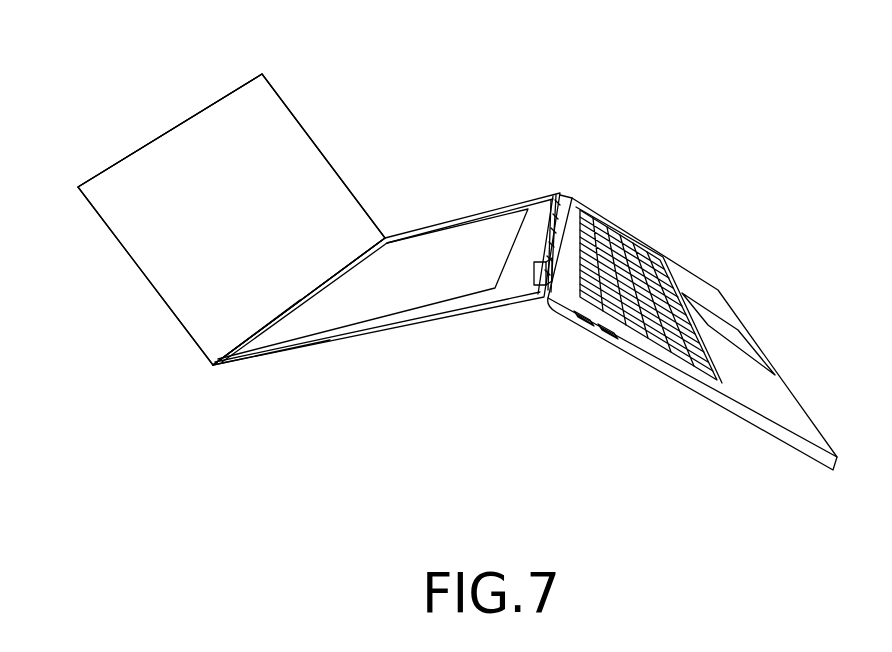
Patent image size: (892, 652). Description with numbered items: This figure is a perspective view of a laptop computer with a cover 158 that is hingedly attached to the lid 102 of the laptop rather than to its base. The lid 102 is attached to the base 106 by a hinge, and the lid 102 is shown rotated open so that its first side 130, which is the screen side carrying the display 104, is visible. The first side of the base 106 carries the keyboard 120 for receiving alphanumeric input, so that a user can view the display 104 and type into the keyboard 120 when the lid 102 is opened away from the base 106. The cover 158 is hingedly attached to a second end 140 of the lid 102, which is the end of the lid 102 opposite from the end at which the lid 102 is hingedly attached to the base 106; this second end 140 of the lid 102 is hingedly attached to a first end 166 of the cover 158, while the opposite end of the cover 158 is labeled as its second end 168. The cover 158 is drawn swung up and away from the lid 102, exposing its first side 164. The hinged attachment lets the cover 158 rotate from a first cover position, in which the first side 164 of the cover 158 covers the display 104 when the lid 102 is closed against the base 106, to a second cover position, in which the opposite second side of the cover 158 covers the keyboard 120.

The lid 102 is at (466, 188).
The display 104 is at (452, 293).
The base 106 is at (667, 241).
The keyboard 120 is at (606, 196).
The first side of the lid 130 is at (420, 229).
The second end of the lid 140 is at (262, 335).
The cover 158 is at (288, 104).
The first side of the cover 164 is at (245, 231).
The first end of the cover 166 is at (264, 322).
The second end of the cover 168 is at (214, 126).